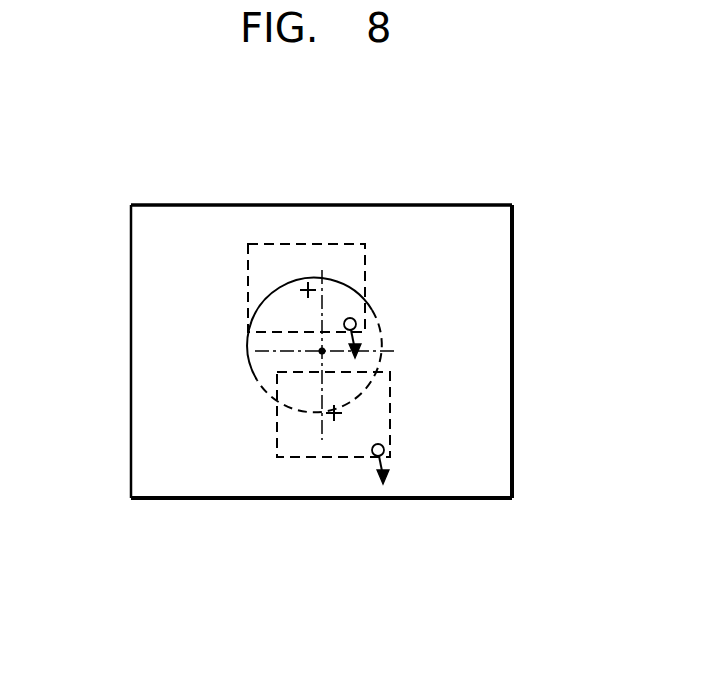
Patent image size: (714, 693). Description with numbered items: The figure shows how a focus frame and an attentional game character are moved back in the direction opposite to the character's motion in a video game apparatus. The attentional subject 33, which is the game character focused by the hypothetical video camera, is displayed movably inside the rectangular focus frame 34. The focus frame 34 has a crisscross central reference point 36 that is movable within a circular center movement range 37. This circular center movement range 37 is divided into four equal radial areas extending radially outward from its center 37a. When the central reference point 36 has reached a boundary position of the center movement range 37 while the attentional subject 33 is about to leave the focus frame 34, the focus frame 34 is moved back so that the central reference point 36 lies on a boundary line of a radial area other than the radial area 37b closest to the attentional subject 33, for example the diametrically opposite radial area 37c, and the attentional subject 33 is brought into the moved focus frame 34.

The attentional subject 33 is at (367, 285).
The rectangular focus frame 34 is at (334, 244).
The crisscross central reference point 36 is at (308, 290).
The circular center movement range 37 is at (380, 304).
The center of the circular center movement range 37a is at (322, 351).
The radial area closest to the attentional subject 37b is at (350, 384).
The radial area diametrically opposite 37c is at (290, 320).